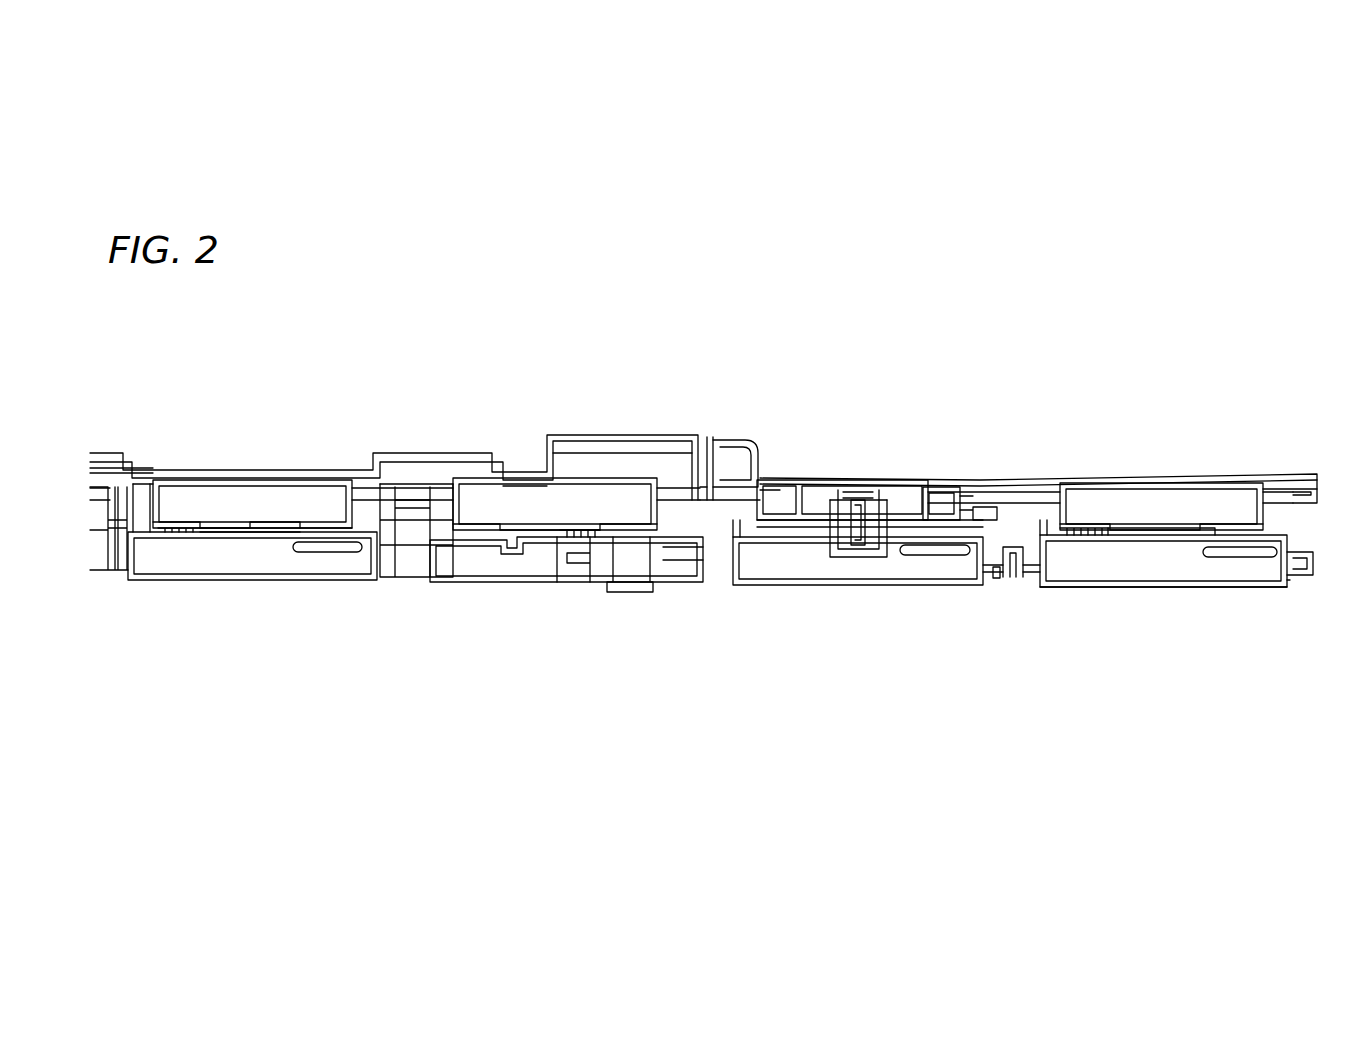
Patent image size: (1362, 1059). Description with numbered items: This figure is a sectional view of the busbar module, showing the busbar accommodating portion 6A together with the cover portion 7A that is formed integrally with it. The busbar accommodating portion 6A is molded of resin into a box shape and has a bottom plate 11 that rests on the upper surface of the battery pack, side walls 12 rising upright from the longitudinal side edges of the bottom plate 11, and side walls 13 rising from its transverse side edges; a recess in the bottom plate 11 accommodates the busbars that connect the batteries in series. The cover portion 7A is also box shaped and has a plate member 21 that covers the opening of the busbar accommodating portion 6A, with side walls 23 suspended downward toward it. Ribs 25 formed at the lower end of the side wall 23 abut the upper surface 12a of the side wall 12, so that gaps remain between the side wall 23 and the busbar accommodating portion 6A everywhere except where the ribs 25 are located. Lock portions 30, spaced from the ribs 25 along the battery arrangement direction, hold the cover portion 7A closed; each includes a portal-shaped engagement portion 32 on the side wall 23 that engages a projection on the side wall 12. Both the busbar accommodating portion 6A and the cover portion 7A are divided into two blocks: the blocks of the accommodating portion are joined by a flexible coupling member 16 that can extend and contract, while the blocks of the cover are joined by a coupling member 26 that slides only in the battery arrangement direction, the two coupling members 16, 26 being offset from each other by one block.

The busbar accommodating portion 6A is at (1223, 588).
The cover portion 7A is at (1195, 472).
The bottom plate 11 is at (1198, 590).
The side wall 12 is at (270, 562).
The upper surface of side wall 12a is at (231, 532).
The side wall 13 is at (990, 590).
The coupling member 16 is at (1016, 580).
The plate member 21 is at (972, 476).
The side wall 23 is at (263, 500).
The rib 25 is at (212, 528).
The coupling member 26 is at (710, 437).
The lock portion 30 is at (843, 568).
The engagement portion 32 is at (868, 535).